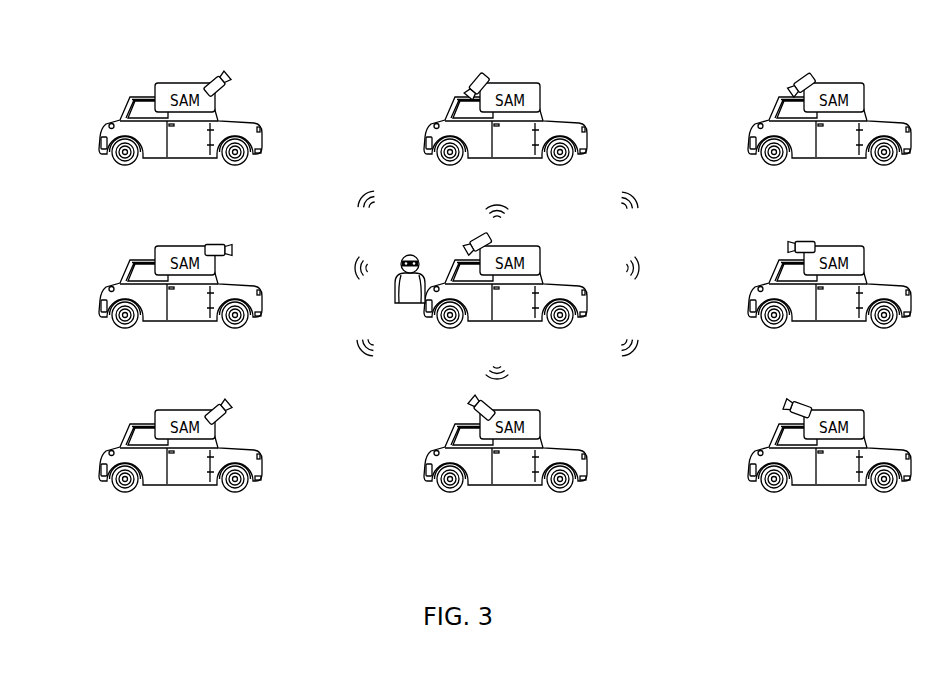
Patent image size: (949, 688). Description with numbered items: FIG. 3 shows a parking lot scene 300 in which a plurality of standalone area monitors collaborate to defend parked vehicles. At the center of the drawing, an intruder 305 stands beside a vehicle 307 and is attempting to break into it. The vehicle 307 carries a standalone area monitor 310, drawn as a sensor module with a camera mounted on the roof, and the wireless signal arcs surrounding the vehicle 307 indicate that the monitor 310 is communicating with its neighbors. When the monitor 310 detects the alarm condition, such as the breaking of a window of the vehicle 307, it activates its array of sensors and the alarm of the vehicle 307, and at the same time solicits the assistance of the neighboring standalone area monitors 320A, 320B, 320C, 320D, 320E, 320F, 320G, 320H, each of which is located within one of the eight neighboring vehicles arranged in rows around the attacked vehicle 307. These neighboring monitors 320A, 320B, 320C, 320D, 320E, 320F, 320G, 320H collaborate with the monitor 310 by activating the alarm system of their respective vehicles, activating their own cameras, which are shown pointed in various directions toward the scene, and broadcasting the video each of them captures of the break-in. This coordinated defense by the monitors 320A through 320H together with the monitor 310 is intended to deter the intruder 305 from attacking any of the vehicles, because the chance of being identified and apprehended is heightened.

The parking lot environment 300 is at (70, 40).
The intruder 305 is at (410, 255).
The vehicle 307 is at (544, 280).
The standalone area monitor 310 is at (538, 256).
The neighboring standalone area monitor 320A is at (184, 83).
The neighboring standalone area monitor 320B is at (538, 93).
The neighboring standalone area monitor 320C is at (863, 93).
The neighboring standalone area monitor 320D is at (184, 246).
The neighboring standalone area monitor 320E is at (863, 258).
The neighboring standalone area monitor 320F is at (184, 410).
The neighboring standalone area monitor 320G is at (538, 415).
The neighboring standalone area monitor 320H is at (863, 421).